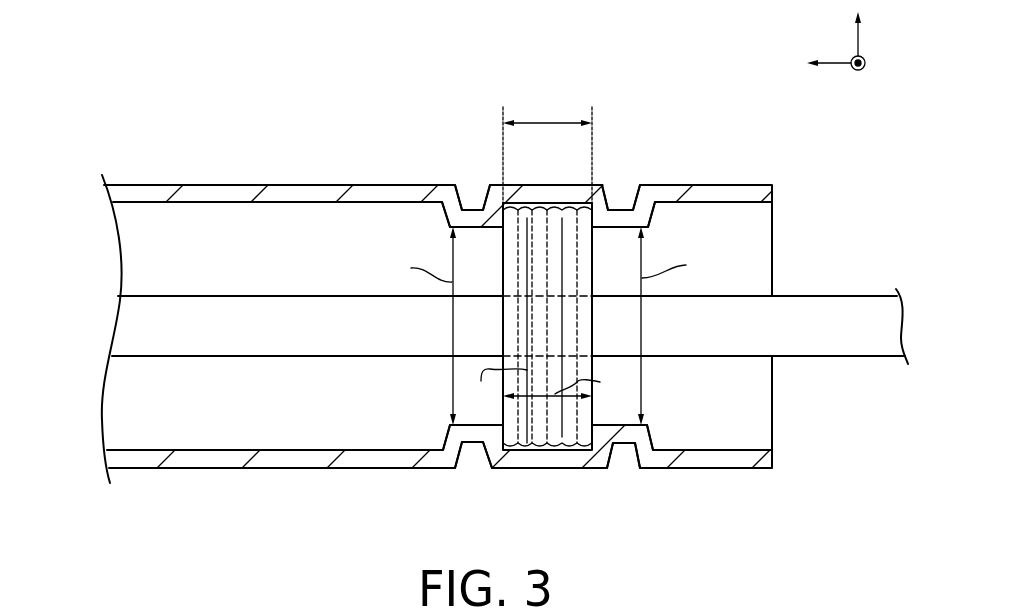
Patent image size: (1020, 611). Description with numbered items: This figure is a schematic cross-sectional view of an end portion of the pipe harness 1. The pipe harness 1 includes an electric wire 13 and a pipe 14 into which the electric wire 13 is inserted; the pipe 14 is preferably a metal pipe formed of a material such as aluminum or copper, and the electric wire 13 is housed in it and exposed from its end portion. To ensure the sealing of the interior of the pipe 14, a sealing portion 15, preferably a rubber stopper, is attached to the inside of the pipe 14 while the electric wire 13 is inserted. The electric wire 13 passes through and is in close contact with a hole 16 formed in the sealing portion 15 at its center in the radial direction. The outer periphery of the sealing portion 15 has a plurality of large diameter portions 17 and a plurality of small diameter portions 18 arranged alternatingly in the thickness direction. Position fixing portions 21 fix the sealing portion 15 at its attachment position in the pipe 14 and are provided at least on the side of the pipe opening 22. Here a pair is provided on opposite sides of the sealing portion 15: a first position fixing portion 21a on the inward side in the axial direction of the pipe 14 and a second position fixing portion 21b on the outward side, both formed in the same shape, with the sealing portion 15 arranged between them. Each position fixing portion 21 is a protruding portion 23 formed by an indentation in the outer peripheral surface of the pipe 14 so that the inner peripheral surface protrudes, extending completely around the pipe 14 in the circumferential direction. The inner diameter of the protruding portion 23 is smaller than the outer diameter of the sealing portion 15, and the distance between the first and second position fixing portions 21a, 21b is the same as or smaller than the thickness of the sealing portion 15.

The pipe harness 1 is at (212, 102).
The electric wire 13 is at (858, 296).
The pipe 14 is at (293, 185).
The sealing portion 15 is at (503, 255).
The hole 16 is at (572, 296).
The large diameter portions 17 is at (575, 205).
The small diameter portions 18 is at (592, 451).
The position fixing portions 21 is at (536, 291).
The first position fixing portion 21a is at (473, 210).
The second position fixing portion 21b is at (623, 211).
The pipe opening 22 is at (740, 202).
The protruding portion 23 is at (536, 291).